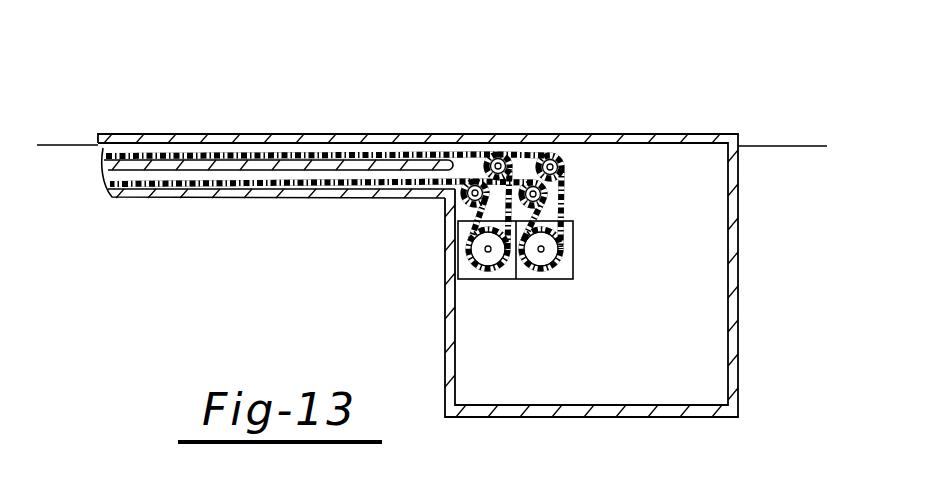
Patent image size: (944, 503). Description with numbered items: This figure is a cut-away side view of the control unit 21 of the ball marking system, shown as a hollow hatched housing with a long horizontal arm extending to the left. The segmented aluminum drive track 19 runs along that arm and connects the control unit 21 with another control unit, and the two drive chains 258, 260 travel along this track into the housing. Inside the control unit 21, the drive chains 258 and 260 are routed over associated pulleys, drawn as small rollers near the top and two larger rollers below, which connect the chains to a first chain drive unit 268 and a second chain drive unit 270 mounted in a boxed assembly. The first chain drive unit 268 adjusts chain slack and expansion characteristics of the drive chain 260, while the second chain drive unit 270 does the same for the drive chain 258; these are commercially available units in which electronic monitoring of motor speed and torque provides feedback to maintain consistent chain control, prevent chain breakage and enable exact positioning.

The segmented aluminum drive track 19 is at (232, 199).
The control unit 21 is at (740, 329).
The drive chain 258 is at (445, 214).
The drive chain 260 is at (567, 210).
The first chain drive unit 268 is at (575, 251).
The second chain drive unit 270 is at (481, 281).